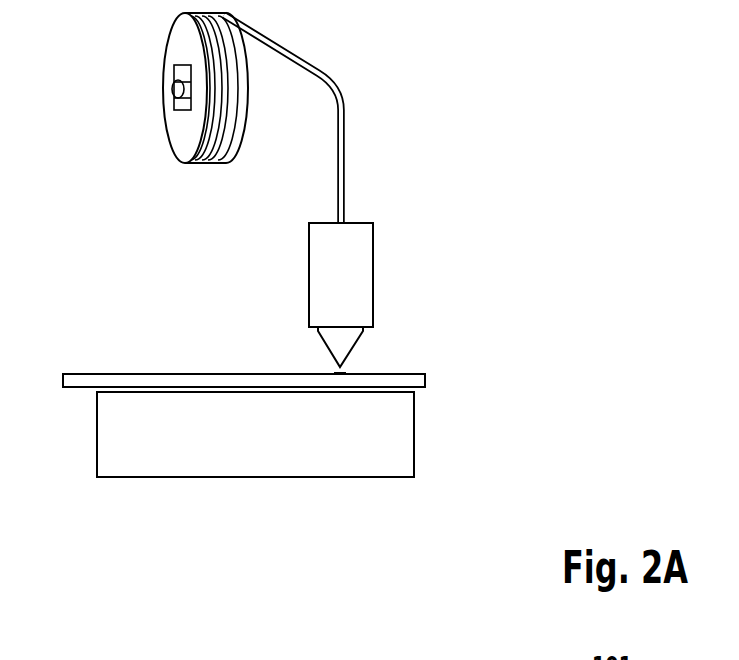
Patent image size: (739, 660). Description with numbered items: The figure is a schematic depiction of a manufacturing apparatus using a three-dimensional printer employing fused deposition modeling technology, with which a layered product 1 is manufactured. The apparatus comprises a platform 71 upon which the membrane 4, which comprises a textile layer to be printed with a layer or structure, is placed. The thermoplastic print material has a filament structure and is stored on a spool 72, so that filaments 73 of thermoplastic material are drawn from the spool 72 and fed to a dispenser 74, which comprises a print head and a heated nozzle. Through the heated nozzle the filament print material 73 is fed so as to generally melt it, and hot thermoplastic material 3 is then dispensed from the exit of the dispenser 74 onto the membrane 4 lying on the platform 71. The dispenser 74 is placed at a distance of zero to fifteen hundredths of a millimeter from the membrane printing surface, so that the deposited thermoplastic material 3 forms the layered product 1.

The layered product 1 is at (68, 295).
The thermoplastic material 3 is at (309, 358).
The membrane 4 is at (427, 378).
The platform 71 is at (414, 432).
The spool 72 is at (180, 41).
The filaments 73 is at (345, 154).
The dispenser 74 is at (373, 272).